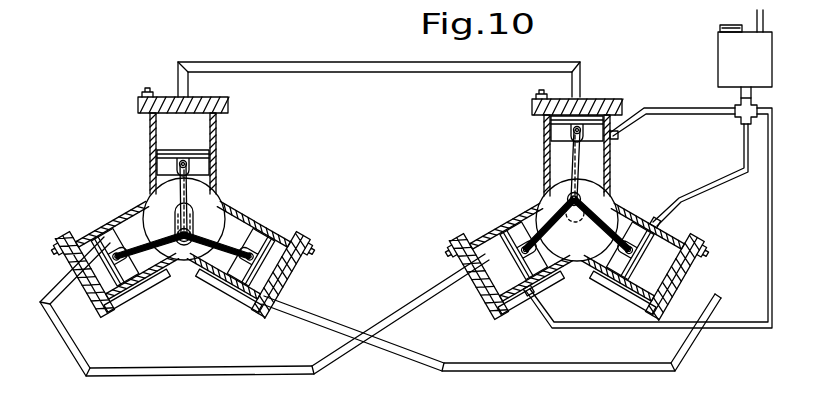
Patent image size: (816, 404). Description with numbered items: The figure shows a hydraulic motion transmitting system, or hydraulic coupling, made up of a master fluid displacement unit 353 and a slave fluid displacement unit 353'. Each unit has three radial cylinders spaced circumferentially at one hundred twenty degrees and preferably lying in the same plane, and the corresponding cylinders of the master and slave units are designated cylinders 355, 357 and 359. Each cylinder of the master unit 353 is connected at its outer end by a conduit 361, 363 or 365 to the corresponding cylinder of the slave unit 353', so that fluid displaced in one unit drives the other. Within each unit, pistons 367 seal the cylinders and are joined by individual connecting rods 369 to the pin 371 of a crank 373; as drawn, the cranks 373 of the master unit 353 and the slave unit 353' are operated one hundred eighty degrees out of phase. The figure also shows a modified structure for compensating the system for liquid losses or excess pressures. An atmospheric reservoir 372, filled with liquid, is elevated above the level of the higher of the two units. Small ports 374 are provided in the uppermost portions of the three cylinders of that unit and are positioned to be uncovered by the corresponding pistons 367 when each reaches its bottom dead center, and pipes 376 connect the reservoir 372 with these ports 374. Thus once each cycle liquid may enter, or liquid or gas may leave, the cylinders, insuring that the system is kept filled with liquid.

The master fluid displacement unit 353 is at (127, 198).
The slave fluid displacement unit 353' is at (534, 168).
The cylinder 355 is at (203, 129).
The cylinder 357 is at (238, 228).
The cylinder 359 is at (112, 293).
The conduit 361 is at (350, 62).
The conduit 363 is at (582, 365).
The conduit 365 is at (345, 349).
The piston 367 is at (153, 147).
The connecting rod 369 is at (140, 232).
The pin 371 is at (185, 247).
The atmospheric reservoir 372 is at (727, 53).
The crank 373 is at (177, 215).
The small port 374 is at (607, 137).
The pipe 376 is at (697, 110).